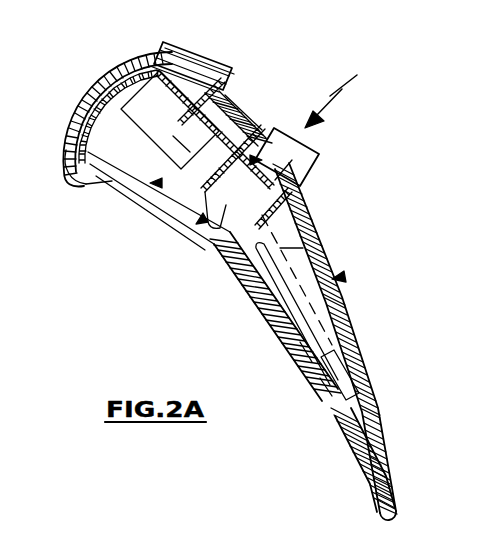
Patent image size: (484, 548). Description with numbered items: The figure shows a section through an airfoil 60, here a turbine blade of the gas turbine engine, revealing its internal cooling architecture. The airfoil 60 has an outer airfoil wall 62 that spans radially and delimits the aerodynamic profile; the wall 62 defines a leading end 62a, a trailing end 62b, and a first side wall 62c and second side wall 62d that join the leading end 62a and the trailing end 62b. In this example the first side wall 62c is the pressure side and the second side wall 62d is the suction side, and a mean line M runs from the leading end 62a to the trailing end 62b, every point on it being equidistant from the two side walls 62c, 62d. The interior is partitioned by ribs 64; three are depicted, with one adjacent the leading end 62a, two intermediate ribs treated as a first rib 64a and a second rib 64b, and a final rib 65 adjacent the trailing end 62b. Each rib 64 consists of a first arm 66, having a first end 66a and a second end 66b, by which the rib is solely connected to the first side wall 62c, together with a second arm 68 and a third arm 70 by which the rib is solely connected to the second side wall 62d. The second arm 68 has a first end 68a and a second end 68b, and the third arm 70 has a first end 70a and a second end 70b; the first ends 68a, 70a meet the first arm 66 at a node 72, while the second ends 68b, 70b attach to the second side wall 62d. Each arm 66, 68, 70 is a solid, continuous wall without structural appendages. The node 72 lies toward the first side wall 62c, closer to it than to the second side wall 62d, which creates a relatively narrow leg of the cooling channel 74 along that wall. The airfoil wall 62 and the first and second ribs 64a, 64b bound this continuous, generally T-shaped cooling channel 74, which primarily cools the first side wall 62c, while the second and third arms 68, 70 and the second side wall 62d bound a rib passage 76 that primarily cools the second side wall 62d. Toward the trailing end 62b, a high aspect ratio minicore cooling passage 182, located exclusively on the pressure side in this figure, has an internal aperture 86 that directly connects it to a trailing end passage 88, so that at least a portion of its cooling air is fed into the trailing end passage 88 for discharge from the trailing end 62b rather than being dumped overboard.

The airfoil 60 is at (342, 96).
The airfoil wall 62 is at (325, 341).
The leading end 62a is at (64, 173).
The trailing end 62b is at (396, 514).
The first side wall 62c is at (248, 280).
The second side wall 62d is at (310, 205).
The rib 64 is at (199, 50).
The first rib 64a is at (140, 203).
The second rib 64b is at (202, 240).
The final rib 65 is at (272, 305).
The first arm 66 is at (165, 245).
The first end of the first arm 66a is at (150, 220).
The second end of the first arm 66b is at (173, 136).
The second arm 68 is at (204, 105).
The first end of the second arm 68a is at (113, 182).
The second end of the second arm 68b is at (232, 85).
The third arm 70 is at (125, 75).
The first end of the third arm 70a is at (229, 210).
The second end of the third arm 70b is at (263, 103).
The node 72 is at (238, 143).
The cooling channel 74 is at (292, 160).
The rib passage 76 is at (237, 100).
The internal aperture 86 is at (320, 378).
The trailing end passage 88 is at (356, 387).
The cooling passage 182 is at (302, 342).
The mean line M is at (308, 249).